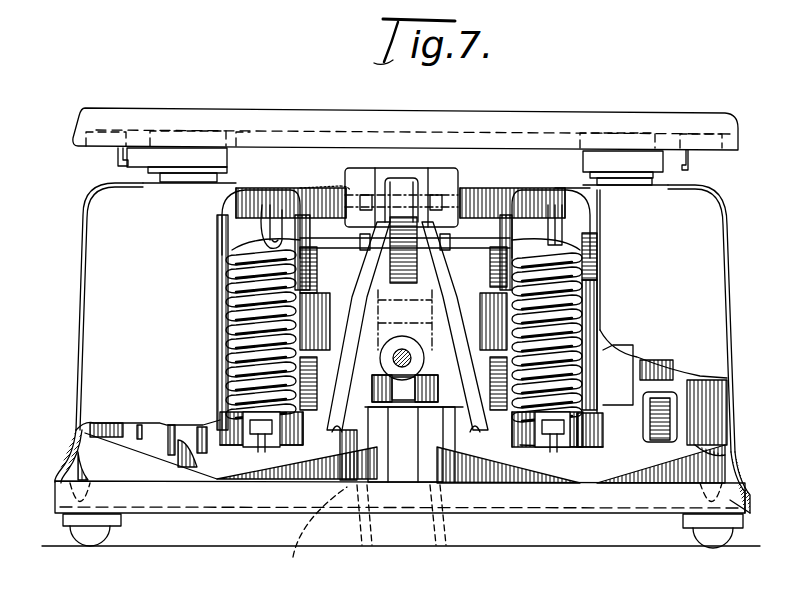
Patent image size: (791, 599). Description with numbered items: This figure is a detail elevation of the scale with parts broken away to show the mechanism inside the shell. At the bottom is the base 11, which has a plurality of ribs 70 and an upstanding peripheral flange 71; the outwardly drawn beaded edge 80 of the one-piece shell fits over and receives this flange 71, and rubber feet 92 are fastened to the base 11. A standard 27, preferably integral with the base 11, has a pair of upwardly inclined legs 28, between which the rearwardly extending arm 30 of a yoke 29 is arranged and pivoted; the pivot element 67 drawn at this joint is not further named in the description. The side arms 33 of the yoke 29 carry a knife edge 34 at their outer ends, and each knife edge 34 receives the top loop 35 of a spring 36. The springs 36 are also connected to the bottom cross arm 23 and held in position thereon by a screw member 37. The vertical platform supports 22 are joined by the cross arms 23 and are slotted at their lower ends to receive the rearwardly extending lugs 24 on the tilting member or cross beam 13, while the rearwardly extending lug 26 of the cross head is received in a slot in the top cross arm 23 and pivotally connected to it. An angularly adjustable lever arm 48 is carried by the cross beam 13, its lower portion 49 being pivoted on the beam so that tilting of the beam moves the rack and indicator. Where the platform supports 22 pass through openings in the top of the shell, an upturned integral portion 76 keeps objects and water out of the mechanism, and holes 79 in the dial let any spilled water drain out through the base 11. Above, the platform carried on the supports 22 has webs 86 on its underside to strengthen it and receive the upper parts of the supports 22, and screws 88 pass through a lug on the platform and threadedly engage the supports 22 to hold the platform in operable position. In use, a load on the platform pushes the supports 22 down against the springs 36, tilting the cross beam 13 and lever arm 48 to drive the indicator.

The base 11 is at (60, 499).
The tilting member or cross beam 13 is at (600, 372).
The platform supports 22 is at (228, 178).
The cross arms 23 is at (462, 236).
The lugs 24 is at (660, 425).
The lug 26 is at (418, 178).
The standard 27 is at (317, 534).
The legs 28 is at (378, 270).
The yoke 29 is at (493, 301).
The arm 30 is at (402, 178).
The side arms 33 is at (240, 232).
The knife edge 34 is at (332, 190).
The top loop 35 is at (272, 238).
The springs 36 is at (236, 322).
The screw member 37 is at (268, 448).
The lever arm 48 is at (398, 437).
The lower portion 49 is at (450, 418).
The pivot pin 67 is at (410, 355).
The ribs 70 is at (100, 440).
The upstanding peripheral flange 71 is at (750, 515).
The upturned integral portion 76 is at (143, 183).
The holes 79 is at (747, 500).
The beaded edge 80 is at (60, 475).
The webs 86 is at (268, 132).
The screws 88 is at (116, 155).
The rubber feet 92 is at (105, 540).